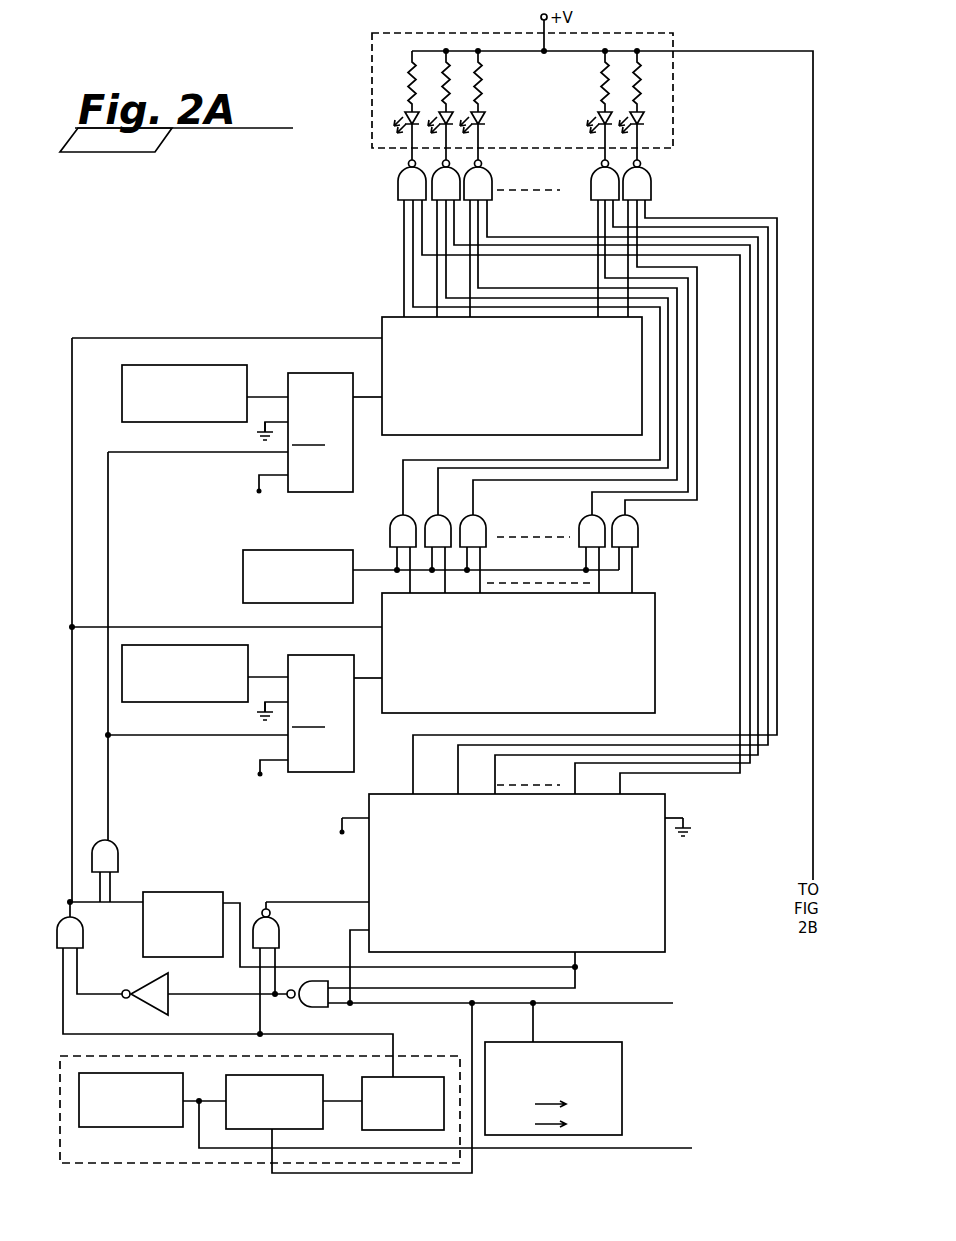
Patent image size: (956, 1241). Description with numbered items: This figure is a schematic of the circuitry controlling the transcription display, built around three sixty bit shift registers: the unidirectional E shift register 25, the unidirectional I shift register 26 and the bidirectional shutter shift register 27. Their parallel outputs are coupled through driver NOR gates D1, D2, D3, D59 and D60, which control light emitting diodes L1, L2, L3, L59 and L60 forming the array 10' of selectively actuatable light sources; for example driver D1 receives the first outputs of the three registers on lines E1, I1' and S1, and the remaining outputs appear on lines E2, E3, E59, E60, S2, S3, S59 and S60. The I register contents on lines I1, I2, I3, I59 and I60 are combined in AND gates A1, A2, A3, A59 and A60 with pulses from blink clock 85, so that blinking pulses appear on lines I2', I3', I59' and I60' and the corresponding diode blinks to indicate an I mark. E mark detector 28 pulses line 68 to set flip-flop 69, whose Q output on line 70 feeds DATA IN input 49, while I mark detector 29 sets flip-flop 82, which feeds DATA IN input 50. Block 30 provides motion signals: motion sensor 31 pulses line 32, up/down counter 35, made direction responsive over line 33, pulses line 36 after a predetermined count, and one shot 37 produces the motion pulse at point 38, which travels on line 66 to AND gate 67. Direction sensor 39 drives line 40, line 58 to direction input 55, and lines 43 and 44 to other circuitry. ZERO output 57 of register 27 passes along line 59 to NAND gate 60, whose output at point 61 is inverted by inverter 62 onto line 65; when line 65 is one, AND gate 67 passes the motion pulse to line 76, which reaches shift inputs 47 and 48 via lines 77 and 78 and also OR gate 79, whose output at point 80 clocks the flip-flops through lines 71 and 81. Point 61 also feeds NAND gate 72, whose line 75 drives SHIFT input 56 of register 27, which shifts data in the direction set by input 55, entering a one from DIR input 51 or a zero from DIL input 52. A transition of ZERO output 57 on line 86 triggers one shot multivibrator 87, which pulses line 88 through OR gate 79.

The array of selectively actuatable light sources 10' is at (503, 90).
The light emitting diode L1 is at (408, 111).
The light emitting diode L2 is at (444, 111).
The light emitting diode L3 is at (482, 113).
The light emitting diode L59 is at (603, 112).
The light emitting diode L60 is at (643, 116).
The driver NOR gate D1 is at (398, 182).
The driver NOR gate D2 is at (457, 196).
The driver NOR gate D3 is at (491, 178).
The driver NOR gate D59 is at (596, 180).
The driver NOR gate D60 is at (649, 176).
The line E1 is at (402, 235).
The line E2 is at (435, 265).
The line E3 is at (468, 298).
The line E59 is at (597, 214).
The line E60 is at (597, 265).
The line I1' is at (513, 357).
The line I2' is at (540, 357).
The line I3' is at (562, 357).
The line I59' is at (614, 357).
The line I60' is at (673, 365).
The line I1 is at (377, 546).
The line I2 is at (384, 586).
The line I3 is at (502, 560).
The line I59 is at (569, 560).
The line I60 is at (659, 576).
The line S1 is at (412, 760).
The line S2 is at (457, 770).
The line S3 is at (494, 778).
The line S59 is at (574, 783).
The line S60 is at (688, 780).
The AND gate A1 is at (390, 536).
The AND gate A2 is at (426, 523).
The AND gate A3 is at (486, 522).
The AND gate A59 is at (580, 530).
The AND gate A60 is at (639, 538).
The E shift register 25 is at (512, 437).
The I shift register 26 is at (655, 698).
The shutter shift register 27 is at (665, 925).
The E mark detector 28 is at (121, 397).
The I mark detector 29 is at (249, 658).
The means for providing motion signals 30 is at (407, 1056).
The motion sensor 31 is at (140, 1072).
The line 32 is at (198, 1100).
The line 33 is at (473, 1026).
The counter 35 is at (247, 1074).
The line 36 is at (342, 1097).
The one shot 37 is at (430, 1077).
The point 38 is at (260, 1032).
The direction sensor 39 is at (622, 1068).
The line 40 is at (535, 1029).
The line 43 is at (660, 1148).
The line 44 is at (650, 1003).
The shift input 47 is at (381, 340).
The shift input 48 is at (381, 630).
The DATA IN input 49 is at (381, 396).
The DATA IN input 50 is at (381, 679).
The DATA INPUT RIGHT input 51 is at (368, 818).
The DATA INPUT LEFT input 52 is at (700, 821).
The direction input 55 is at (368, 930).
The SHIFT input 56 is at (368, 903).
The ZERO output 57 is at (580, 955).
The line 58 is at (349, 952).
The line 59 is at (476, 987).
The NAND gate 60 is at (318, 1008).
The point 61 is at (275, 1000).
The inverter 62 is at (152, 976).
The line 65 is at (79, 978).
The line 66 is at (65, 1016).
The AND gate 67 is at (84, 938).
The line 68 is at (263, 396).
The flip-flop 69 is at (312, 492).
The line 70 is at (357, 400).
The line 71 is at (164, 452).
The NAND gate 72 is at (282, 936).
The line 75 is at (300, 901).
The line 76 is at (78, 908).
The line 77 is at (228, 338).
The line 78 is at (172, 627).
The OR gate 79 is at (142, 824).
The point 80 is at (109, 740).
The line 81 is at (196, 736).
The flip-flop 82 is at (298, 773).
The blink clock 85 is at (242, 569).
The line 86 is at (420, 968).
The one shot multivibrator 87 is at (193, 892).
The line 88 is at (112, 888).